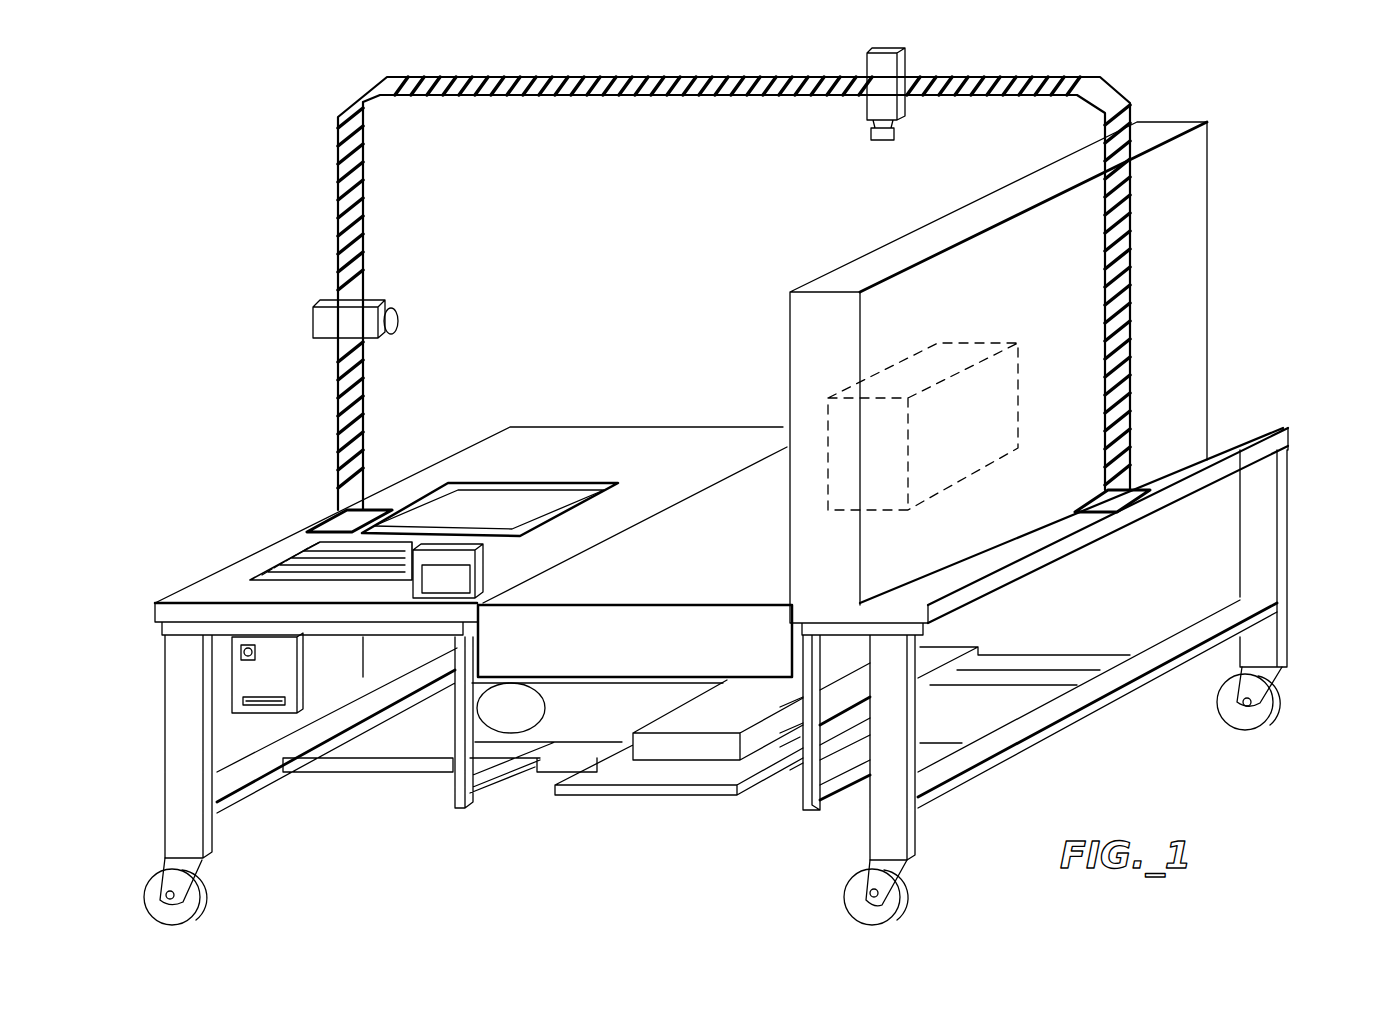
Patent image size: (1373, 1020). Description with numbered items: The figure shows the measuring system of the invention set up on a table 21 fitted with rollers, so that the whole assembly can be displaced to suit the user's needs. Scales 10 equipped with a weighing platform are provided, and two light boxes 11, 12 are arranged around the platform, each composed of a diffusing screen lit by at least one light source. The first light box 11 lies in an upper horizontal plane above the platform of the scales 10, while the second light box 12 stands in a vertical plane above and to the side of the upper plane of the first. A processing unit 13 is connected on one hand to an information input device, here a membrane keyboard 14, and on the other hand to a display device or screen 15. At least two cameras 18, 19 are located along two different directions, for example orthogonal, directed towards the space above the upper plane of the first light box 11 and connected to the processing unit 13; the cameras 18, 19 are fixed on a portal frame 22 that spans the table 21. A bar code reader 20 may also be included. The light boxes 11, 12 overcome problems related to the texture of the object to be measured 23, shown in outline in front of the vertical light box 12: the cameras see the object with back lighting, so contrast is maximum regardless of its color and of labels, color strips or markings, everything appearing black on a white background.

The scales 10 is at (678, 755).
The first light box 11 is at (733, 497).
The second light box 12 is at (800, 332).
The processing unit 13 is at (317, 685).
The membrane keyboard 14 is at (297, 558).
The display device or screen 15 is at (458, 482).
The camera 18 is at (867, 106).
The camera 19 is at (318, 323).
The bar code reader 20 is at (462, 578).
The table 21 is at (1283, 582).
The portal frame 22 is at (339, 192).
The object to be measured 23 is at (908, 377).